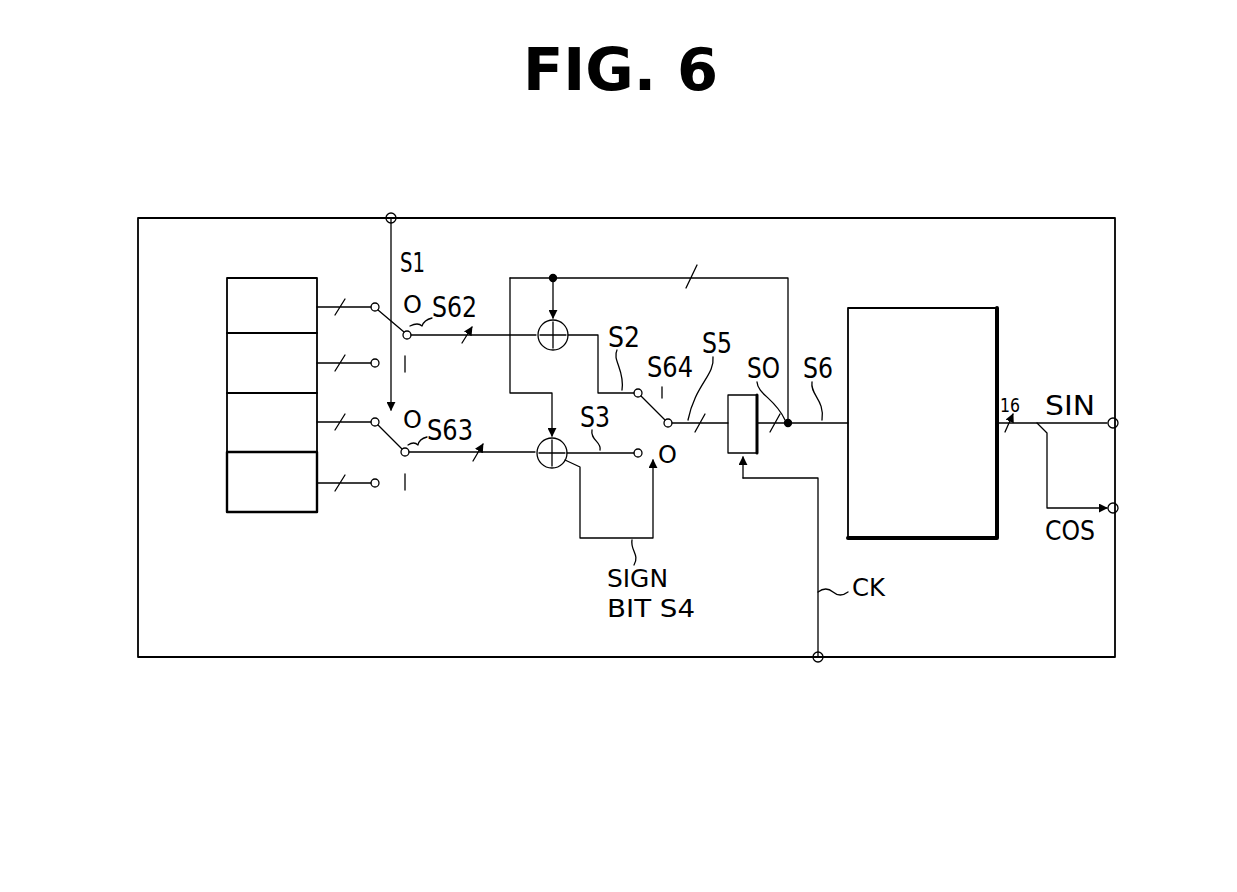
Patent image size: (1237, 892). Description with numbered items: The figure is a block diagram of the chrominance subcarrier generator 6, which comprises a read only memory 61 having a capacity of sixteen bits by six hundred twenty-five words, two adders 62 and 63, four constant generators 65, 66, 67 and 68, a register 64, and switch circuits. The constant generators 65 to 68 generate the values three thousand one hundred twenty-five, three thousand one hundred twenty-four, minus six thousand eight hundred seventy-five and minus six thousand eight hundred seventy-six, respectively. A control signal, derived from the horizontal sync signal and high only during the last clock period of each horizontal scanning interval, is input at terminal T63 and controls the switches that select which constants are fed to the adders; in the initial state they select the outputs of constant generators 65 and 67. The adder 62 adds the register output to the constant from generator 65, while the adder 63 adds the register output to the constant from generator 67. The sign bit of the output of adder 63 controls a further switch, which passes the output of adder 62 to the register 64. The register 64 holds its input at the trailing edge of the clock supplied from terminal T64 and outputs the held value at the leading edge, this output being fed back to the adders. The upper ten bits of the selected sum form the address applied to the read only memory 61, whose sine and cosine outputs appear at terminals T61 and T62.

The chrominance subcarrier generator 6 is at (900, 218).
The read only memory (ROM) 61 is at (912, 308).
The adder 62 is at (566, 325).
The adder 63 is at (545, 468).
The register 64 is at (733, 463).
The constant generator 65 is at (225, 302).
The constant generator 66 is at (225, 364).
The constant generator 67 is at (225, 423).
The constant generator 68 is at (225, 484).
The output terminal T61 is at (1118, 423).
The output terminal T62 is at (1118, 508).
The input terminal T63 is at (392, 213).
The terminal T64 is at (818, 662).